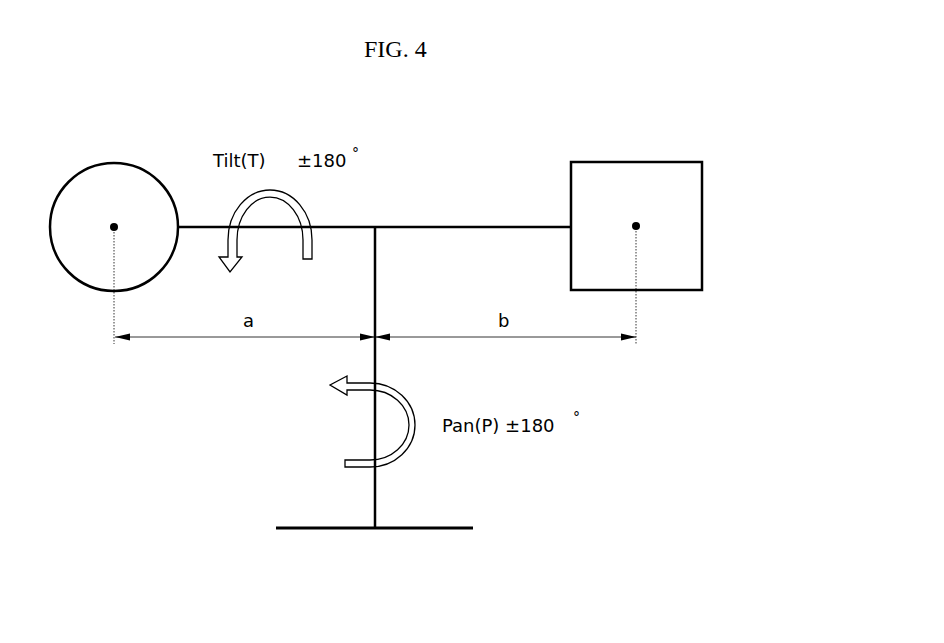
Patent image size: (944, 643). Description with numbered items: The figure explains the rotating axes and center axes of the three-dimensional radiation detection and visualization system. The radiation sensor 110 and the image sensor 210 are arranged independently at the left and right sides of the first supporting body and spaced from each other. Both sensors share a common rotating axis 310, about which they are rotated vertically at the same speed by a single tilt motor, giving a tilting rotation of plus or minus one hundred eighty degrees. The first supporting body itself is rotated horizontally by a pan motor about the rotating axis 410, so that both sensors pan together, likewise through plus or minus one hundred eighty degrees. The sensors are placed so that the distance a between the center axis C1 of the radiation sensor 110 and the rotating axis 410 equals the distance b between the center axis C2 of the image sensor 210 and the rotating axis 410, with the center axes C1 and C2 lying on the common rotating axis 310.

The radiation sensor 110 is at (97, 178).
The center axis of the radiation sensor C1 is at (112, 228).
The common rotating axis 310 is at (453, 225).
The image sensor 210 is at (624, 185).
The center axis of the image sensor C2 is at (636, 226).
The rotating axis of the pan motor 410 is at (373, 490).